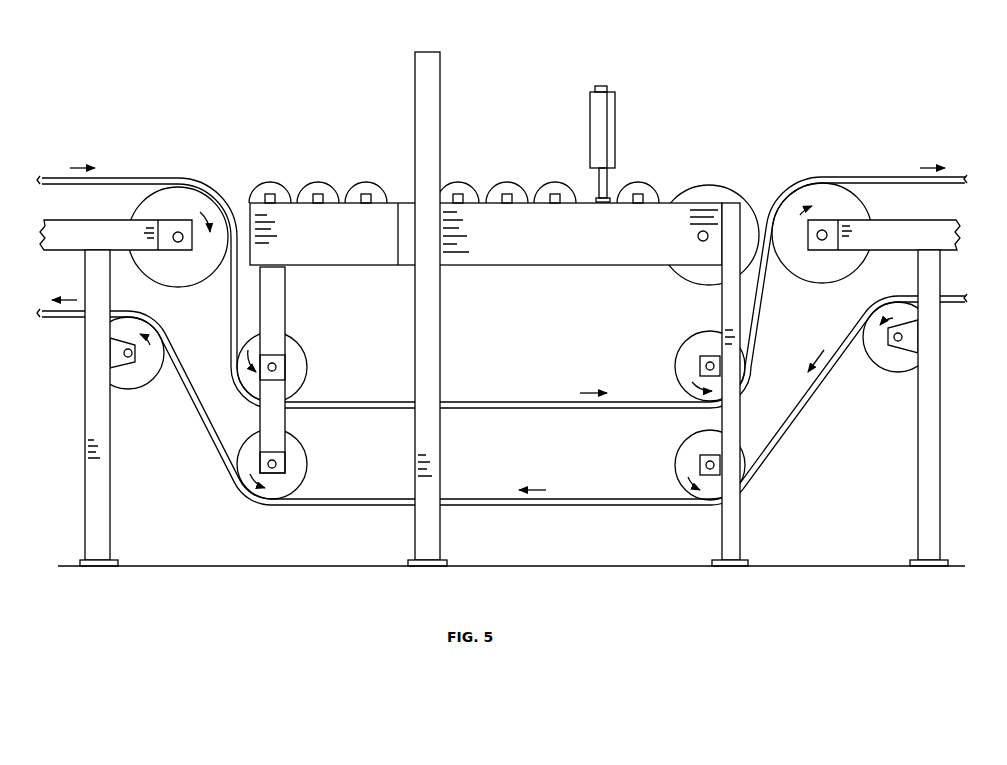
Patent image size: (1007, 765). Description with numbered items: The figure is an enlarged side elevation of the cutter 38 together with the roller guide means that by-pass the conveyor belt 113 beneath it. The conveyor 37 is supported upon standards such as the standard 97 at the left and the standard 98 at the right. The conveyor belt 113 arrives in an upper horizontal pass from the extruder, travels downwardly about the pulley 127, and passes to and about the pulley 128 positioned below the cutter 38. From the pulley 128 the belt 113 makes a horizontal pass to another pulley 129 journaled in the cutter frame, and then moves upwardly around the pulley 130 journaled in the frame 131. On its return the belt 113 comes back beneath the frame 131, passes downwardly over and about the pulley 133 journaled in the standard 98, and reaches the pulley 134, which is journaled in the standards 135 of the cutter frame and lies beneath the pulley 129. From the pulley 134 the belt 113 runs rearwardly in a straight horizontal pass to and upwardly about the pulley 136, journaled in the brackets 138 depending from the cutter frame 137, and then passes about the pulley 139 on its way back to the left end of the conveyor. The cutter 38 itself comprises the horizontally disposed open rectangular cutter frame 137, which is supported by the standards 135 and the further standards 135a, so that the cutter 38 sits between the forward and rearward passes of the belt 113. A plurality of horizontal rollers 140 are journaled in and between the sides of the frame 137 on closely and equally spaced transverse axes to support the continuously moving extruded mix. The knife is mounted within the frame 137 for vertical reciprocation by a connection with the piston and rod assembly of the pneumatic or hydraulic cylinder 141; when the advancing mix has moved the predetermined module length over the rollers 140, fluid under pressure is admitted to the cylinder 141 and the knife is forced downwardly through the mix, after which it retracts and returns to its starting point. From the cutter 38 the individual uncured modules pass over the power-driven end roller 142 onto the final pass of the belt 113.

The conveyor 37 is at (52, 254).
The cutter 38 is at (431, 152).
The standard 97 is at (105, 514).
The standard 98 is at (940, 520).
The conveyor belt 113 is at (150, 176).
The pulley 127 is at (190, 278).
The pulley 128 is at (300, 368).
The pulley 129 is at (684, 371).
The pulley 130 is at (820, 282).
The frame 131 is at (912, 230).
The pulley 133 is at (893, 360).
The pulley 134 is at (684, 467).
The standards 135 is at (744, 520).
The standards 135a is at (418, 522).
The pulley 136 is at (300, 468).
The cutter frame 137 is at (506, 255).
The brackets 138 is at (322, 268).
The pulley 139 is at (152, 385).
The horizontal rollers 140 is at (313, 182).
The cylinder 141 is at (615, 110).
The end roller 142 is at (713, 185).